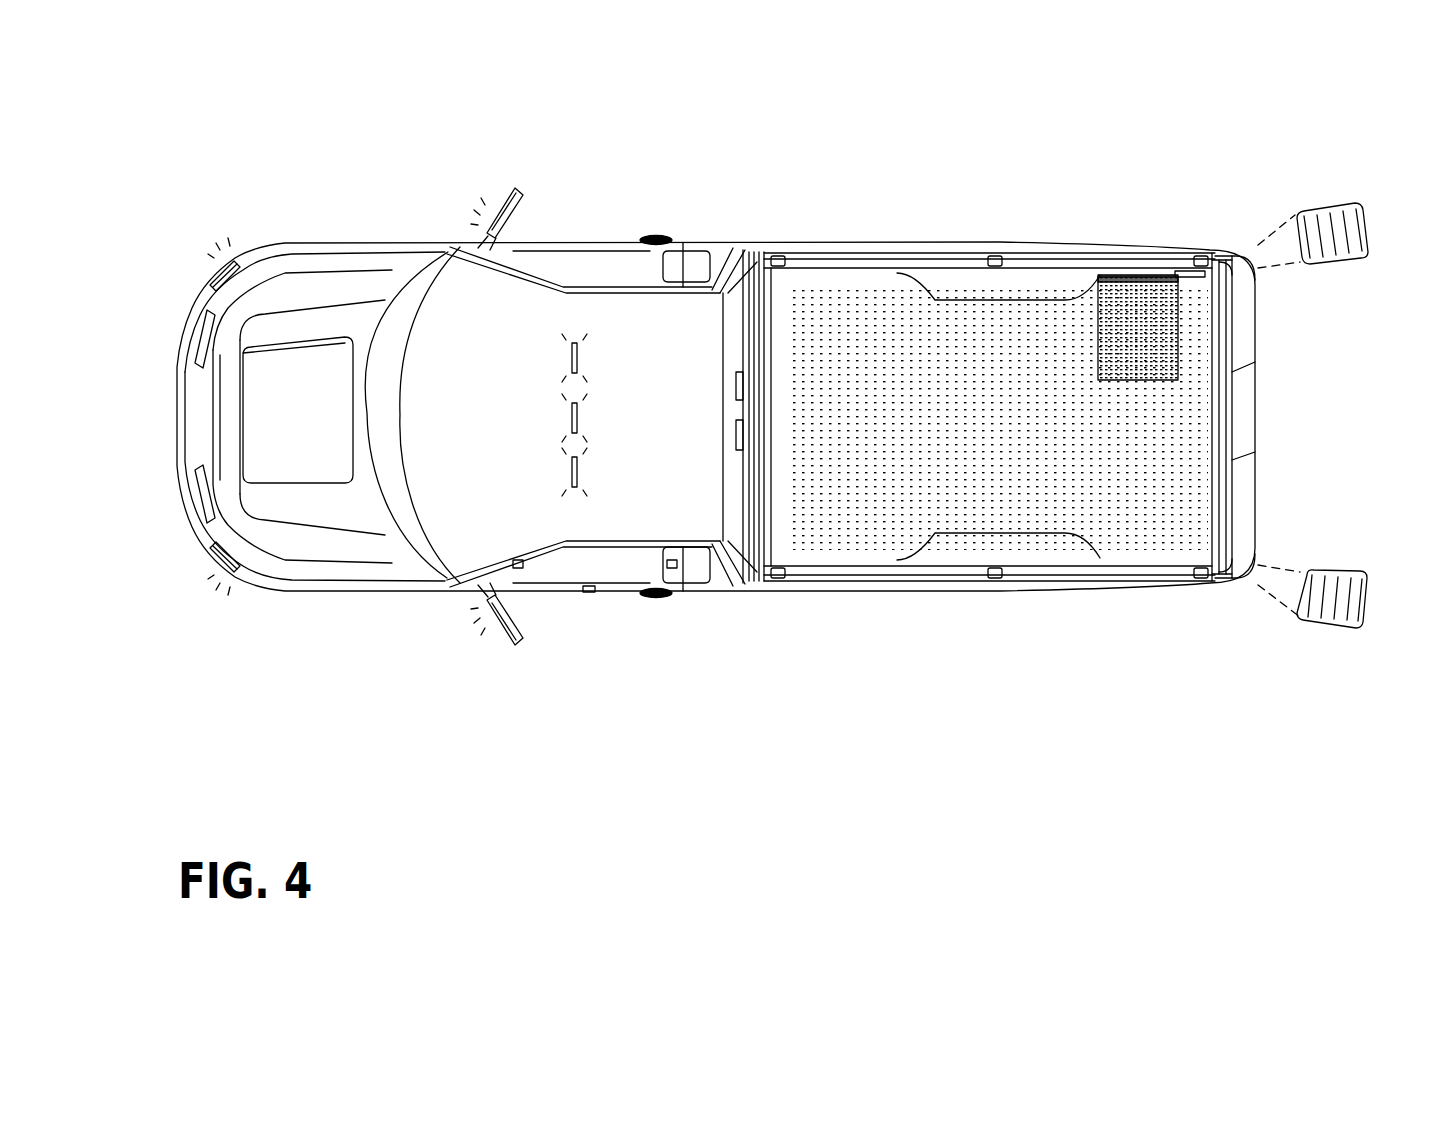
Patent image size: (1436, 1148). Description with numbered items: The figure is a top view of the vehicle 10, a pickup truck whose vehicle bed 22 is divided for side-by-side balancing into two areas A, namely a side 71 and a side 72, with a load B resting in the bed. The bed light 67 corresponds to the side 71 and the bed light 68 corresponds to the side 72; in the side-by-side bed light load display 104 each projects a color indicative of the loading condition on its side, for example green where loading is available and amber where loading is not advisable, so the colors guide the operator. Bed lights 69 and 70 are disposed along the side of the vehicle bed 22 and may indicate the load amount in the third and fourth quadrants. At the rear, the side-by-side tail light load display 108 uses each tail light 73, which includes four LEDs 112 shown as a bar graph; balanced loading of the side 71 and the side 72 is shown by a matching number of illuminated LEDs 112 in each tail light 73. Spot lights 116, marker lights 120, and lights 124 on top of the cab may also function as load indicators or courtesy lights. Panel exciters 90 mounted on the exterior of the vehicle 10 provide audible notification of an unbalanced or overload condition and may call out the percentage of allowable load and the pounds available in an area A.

The vehicle 10 is at (302, 182).
The vehicle bed 22 is at (877, 410).
The bed light 67 is at (738, 455).
The bed light 68 is at (738, 372).
The bed light 69 is at (1193, 543).
The bed light 70 is at (1197, 273).
The side 71 is at (1060, 480).
The side 72 is at (1040, 343).
The tail light 73 is at (1364, 236).
The panel exciter 90 is at (520, 575).
The side-by-side bed light load display 104 is at (797, 305).
The side-by-side tail light load display 108 is at (1230, 612).
The LEDs 112 is at (1313, 204).
The spot lights 116 is at (495, 212).
The marker lights 120 is at (218, 267).
The lights on top of a vehicle cab 124 is at (582, 357).
The area A is at (967, 317).
The load B is at (1133, 297).